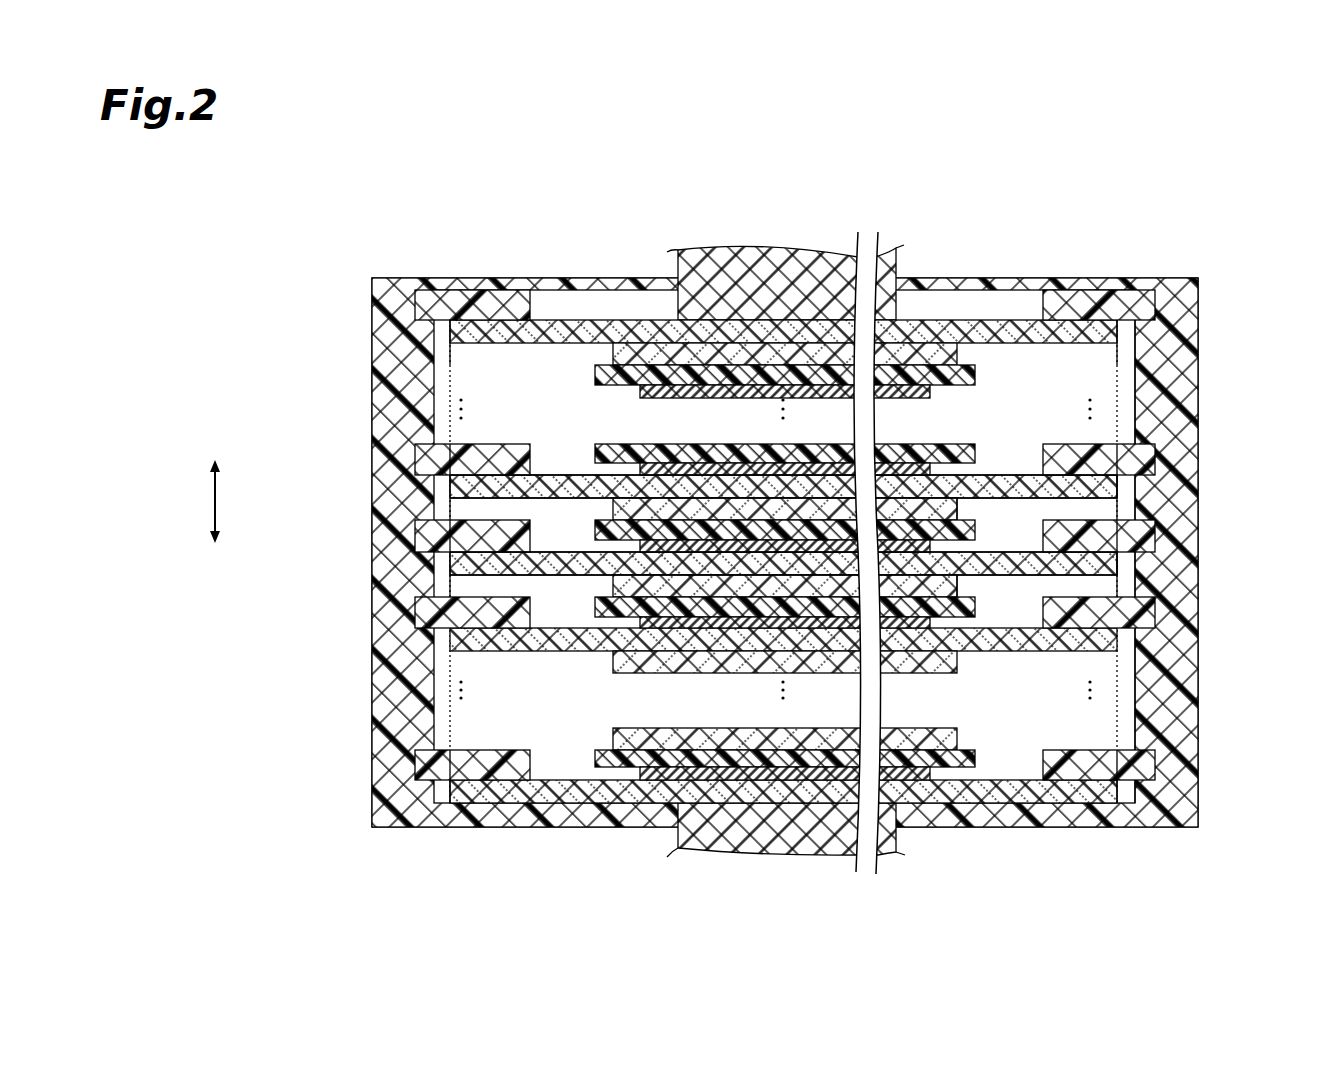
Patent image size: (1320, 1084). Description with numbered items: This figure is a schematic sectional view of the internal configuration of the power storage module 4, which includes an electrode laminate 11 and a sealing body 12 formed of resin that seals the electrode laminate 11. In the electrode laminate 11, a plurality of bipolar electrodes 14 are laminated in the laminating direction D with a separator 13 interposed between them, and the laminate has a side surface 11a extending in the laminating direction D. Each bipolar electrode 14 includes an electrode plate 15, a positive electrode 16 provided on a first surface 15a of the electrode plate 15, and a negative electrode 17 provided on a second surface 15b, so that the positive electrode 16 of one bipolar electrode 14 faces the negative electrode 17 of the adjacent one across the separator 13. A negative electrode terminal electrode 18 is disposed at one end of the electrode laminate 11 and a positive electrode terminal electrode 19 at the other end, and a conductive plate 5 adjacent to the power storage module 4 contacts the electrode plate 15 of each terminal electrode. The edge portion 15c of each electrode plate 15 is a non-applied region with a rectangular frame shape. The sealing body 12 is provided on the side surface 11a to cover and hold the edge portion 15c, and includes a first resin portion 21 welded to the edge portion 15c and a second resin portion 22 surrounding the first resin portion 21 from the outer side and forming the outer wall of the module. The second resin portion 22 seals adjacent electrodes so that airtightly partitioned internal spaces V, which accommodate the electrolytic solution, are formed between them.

The power storage module 4 is at (488, 200).
The conductive plate 5 is at (772, 260).
The electrode laminate 11 is at (966, 283).
The side surface 11a is at (450, 404).
The sealing body 12 is at (1206, 298).
The separator 13 is at (975, 377).
The bipolar electrode 14 is at (298, 415).
The electrode plate 15 is at (450, 332).
The first surface 15a is at (1090, 476).
The second surface 15b is at (1090, 498).
The edge portion 15c is at (1118, 487).
The positive electrode 16 is at (638, 470).
The negative electrode 17 is at (613, 355).
The negative electrode terminal electrode 18 is at (295, 305).
The positive electrode terminal electrode 19 is at (295, 757).
The first resin portion 21 is at (440, 302).
The second resin portion 22 is at (395, 695).
The laminating direction D is at (212, 503).
The internal space V is at (1090, 513).